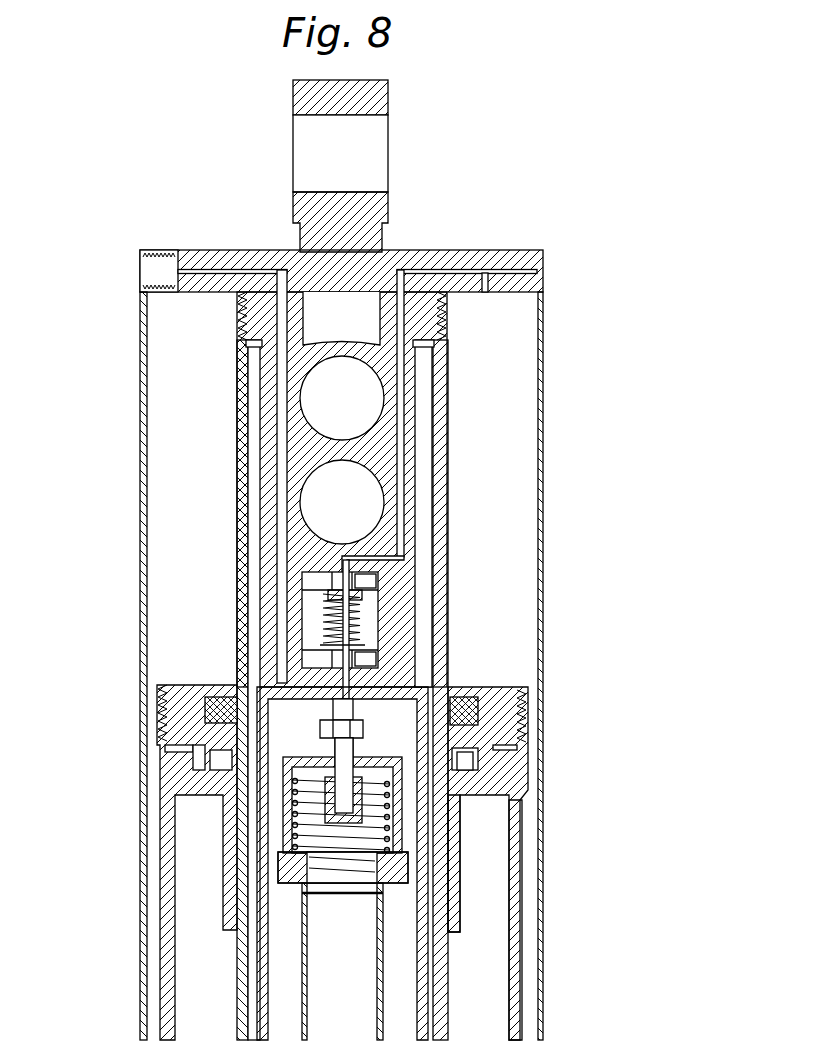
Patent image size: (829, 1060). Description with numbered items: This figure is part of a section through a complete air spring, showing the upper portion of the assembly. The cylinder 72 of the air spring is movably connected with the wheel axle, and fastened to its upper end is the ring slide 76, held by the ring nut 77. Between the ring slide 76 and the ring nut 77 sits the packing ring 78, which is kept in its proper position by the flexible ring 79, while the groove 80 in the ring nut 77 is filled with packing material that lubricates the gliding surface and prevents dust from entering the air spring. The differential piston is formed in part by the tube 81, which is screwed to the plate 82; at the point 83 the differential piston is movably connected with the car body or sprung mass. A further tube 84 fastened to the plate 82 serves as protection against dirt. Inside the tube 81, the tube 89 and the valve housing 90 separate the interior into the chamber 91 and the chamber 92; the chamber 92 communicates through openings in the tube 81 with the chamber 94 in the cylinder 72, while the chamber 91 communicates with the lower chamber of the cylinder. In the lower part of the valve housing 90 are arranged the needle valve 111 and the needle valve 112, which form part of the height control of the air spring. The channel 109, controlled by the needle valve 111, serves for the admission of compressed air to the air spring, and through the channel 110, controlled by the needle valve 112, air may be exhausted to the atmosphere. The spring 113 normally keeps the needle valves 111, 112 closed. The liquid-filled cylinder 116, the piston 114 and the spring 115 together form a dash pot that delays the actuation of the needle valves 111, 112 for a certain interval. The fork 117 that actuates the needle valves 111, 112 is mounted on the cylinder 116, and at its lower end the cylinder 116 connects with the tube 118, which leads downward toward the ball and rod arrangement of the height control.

The cylinder 72 is at (513, 985).
The ring slide 76 is at (456, 846).
The ring nut 77 is at (490, 690).
The packing ring 78 is at (520, 745).
The flexible ring 79 is at (480, 758).
The groove 80 is at (480, 713).
The tube 81 is at (446, 652).
The plate 82 is at (516, 258).
The connection to car body 83 is at (390, 100).
The tube 84 is at (544, 317).
The tube 89 is at (423, 985).
The valve housing 90 is at (412, 377).
The chamber 91 is at (285, 1003).
The chamber 92 is at (255, 968).
The chamber 94 is at (200, 933).
The channel 109 is at (287, 425).
The channel 110 is at (398, 440).
The needle valve 111 is at (330, 645).
The needle valve 112 is at (340, 593).
The spring 113 is at (320, 620).
The piston 114 is at (290, 785).
The spring 115 is at (290, 812).
The liquid-filled cylinder 116 is at (283, 842).
The fork 117 is at (367, 651).
The tube 118 is at (305, 922).